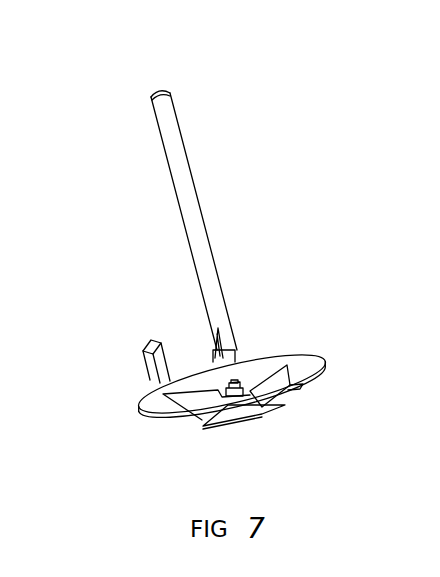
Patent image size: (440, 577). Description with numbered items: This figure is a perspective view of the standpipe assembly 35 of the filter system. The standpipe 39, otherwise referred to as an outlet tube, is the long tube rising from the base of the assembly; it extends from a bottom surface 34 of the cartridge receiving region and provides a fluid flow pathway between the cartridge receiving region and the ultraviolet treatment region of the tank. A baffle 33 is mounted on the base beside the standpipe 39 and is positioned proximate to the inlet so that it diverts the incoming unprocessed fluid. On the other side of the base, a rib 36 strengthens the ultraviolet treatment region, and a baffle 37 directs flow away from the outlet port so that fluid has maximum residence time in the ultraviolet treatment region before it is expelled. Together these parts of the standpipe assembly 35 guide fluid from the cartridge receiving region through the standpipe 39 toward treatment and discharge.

The baffle 33 is at (146, 338).
The bottom surface 34 is at (253, 357).
The standpipe assembly 35 is at (253, 203).
The rib 36 is at (285, 380).
The baffle 37 is at (229, 414).
The standpipe 39 is at (180, 127).